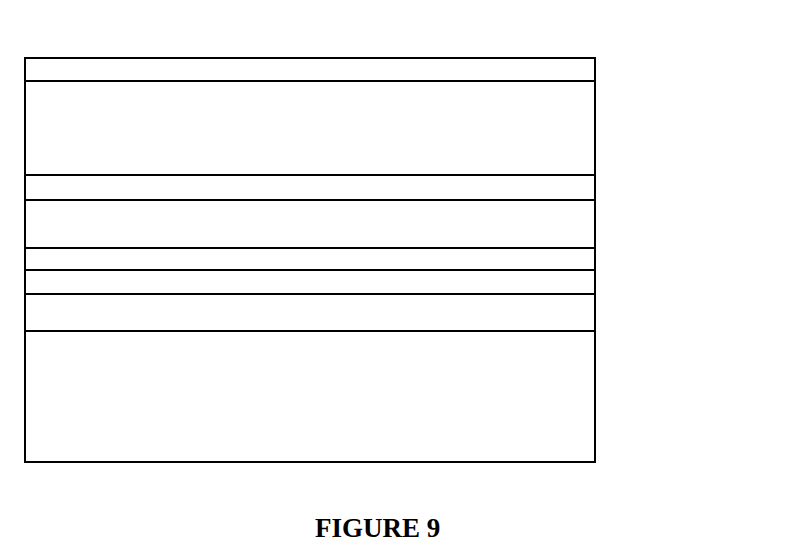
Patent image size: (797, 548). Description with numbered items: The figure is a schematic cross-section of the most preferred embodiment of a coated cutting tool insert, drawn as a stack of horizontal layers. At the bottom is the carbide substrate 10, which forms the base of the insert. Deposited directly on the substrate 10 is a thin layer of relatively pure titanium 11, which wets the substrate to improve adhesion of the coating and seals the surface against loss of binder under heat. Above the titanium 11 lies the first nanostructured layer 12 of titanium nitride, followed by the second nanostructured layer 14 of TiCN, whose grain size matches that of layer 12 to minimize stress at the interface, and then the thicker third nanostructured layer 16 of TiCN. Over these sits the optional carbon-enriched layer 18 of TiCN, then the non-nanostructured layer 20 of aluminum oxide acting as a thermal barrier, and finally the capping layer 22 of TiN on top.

The substrate 10 is at (595, 363).
The titanium layer 11 is at (595, 331).
The first nanostructured layer 12 is at (595, 294).
The second nanostructured layer 14 is at (595, 270).
The third nanostructured layer 16 is at (595, 222).
The carbon-enriched layer 18 is at (595, 200).
The non-nanostructured layer 20 is at (595, 128).
The capping layer 22 is at (595, 81).